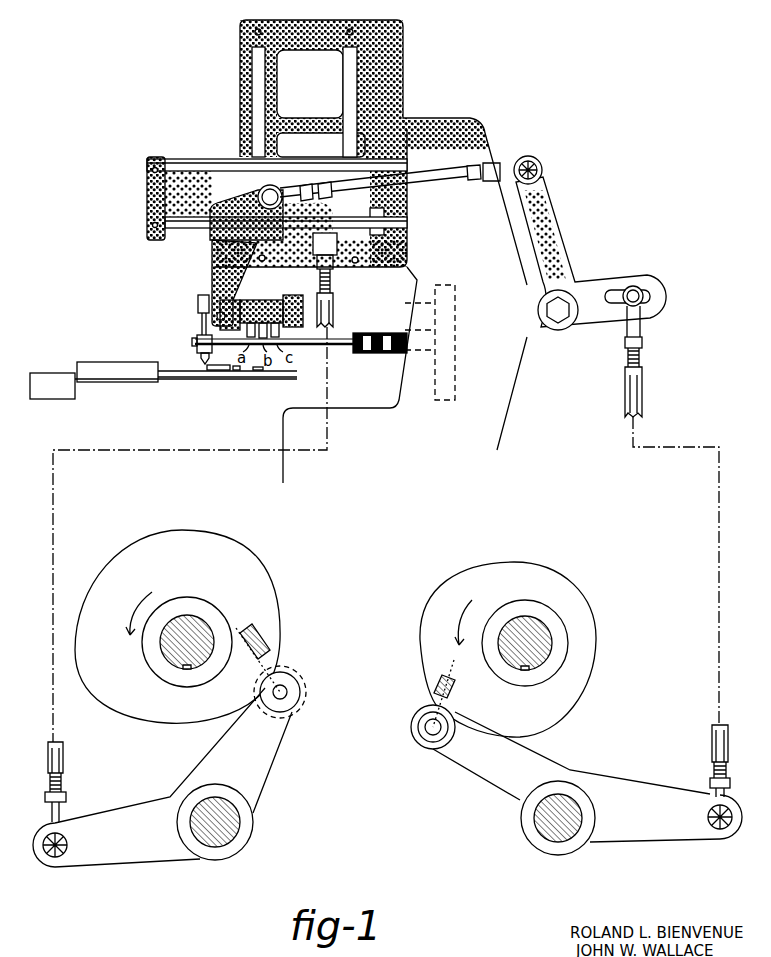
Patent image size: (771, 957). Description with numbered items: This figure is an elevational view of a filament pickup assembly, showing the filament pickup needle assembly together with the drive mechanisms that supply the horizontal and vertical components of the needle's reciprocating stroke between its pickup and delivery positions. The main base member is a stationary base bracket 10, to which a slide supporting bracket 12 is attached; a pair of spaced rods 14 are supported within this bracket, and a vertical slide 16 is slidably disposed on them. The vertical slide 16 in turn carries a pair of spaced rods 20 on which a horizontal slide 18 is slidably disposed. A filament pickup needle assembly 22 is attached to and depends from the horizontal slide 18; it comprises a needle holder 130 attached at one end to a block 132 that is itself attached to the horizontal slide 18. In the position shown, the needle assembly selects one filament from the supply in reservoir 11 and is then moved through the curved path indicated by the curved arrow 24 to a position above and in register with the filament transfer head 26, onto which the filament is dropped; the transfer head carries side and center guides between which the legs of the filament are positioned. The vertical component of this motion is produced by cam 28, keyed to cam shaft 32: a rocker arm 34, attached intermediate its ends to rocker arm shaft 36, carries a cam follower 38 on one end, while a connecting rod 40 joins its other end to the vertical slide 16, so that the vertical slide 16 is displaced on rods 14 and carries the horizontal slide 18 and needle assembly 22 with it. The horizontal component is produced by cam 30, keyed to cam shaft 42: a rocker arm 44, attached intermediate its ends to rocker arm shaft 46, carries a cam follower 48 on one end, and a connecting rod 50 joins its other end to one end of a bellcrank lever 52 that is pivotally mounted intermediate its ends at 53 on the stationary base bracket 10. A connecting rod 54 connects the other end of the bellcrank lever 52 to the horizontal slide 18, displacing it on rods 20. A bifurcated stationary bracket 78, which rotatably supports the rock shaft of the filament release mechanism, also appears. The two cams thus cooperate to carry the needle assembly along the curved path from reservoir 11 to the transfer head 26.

The stationary base bracket 10 is at (522, 380).
The reservoir 11 is at (196, 380).
The slide supporting bracket 12 is at (403, 72).
The spaced rods 14 is at (265, 98).
The vertical slide 16 is at (147, 199).
The horizontal slide 18 is at (213, 260).
The spaced rods 20 is at (203, 166).
The filament pickup needle assembly 22 is at (194, 324).
The curved arrow 24 is at (258, 294).
The filament transfer head 26 is at (284, 300).
The cam 28 is at (278, 598).
The cam 30 is at (582, 597).
The cam shaft 32 is at (205, 640).
The rocker arm 34 is at (276, 750).
The rocker arm shaft 36 is at (235, 828).
The cam follower 38 is at (298, 684).
The connecting rod 40 is at (333, 300).
The cam shaft 42 is at (555, 650).
The rocker arm 44 is at (620, 838).
The rocker arm shaft 46 is at (537, 828).
The cam follower 48 is at (425, 710).
The connecting rod 50 is at (628, 386).
The bellcrank lever 52 is at (560, 220).
The pivot 53 is at (558, 330).
The connecting rod 54 is at (488, 160).
The bifurcated stationary bracket 78 is at (405, 303).
The needle holder 130 is at (200, 329).
The block 132 is at (198, 300).